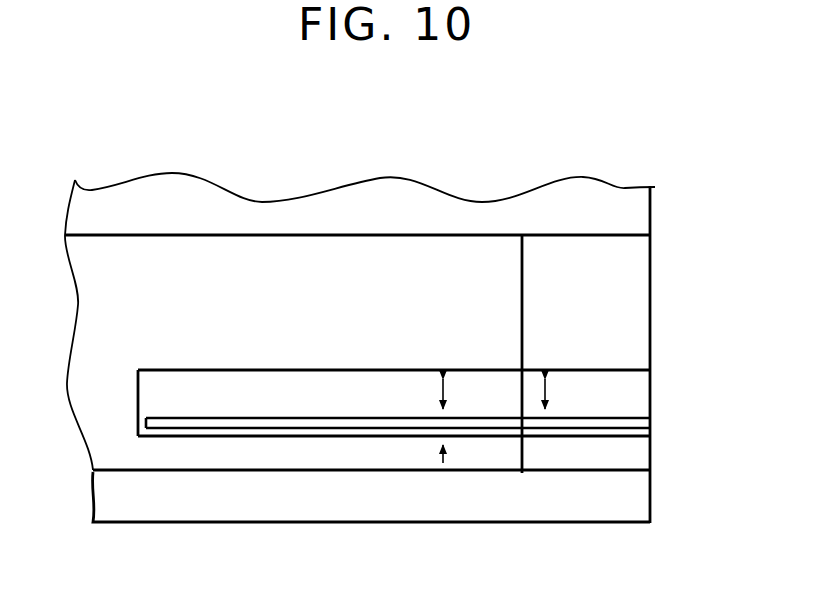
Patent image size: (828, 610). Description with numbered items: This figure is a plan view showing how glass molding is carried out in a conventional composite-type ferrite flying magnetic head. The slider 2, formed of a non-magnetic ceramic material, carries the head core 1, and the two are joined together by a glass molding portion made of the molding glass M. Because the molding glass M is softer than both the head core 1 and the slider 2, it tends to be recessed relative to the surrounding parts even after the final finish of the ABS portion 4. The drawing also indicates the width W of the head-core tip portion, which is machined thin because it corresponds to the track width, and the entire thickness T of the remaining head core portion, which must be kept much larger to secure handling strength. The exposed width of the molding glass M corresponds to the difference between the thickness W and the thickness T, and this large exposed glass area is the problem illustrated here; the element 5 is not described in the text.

The head core 1 is at (327, 424).
The slider 2 is at (632, 300).
The ABS portion 4 is at (463, 250).
The lower member 5 is at (612, 372).
The molding glass M is at (250, 378).
The width of the head-core tip portion W is at (446, 396).
The thickness of the head core portion T is at (549, 403).